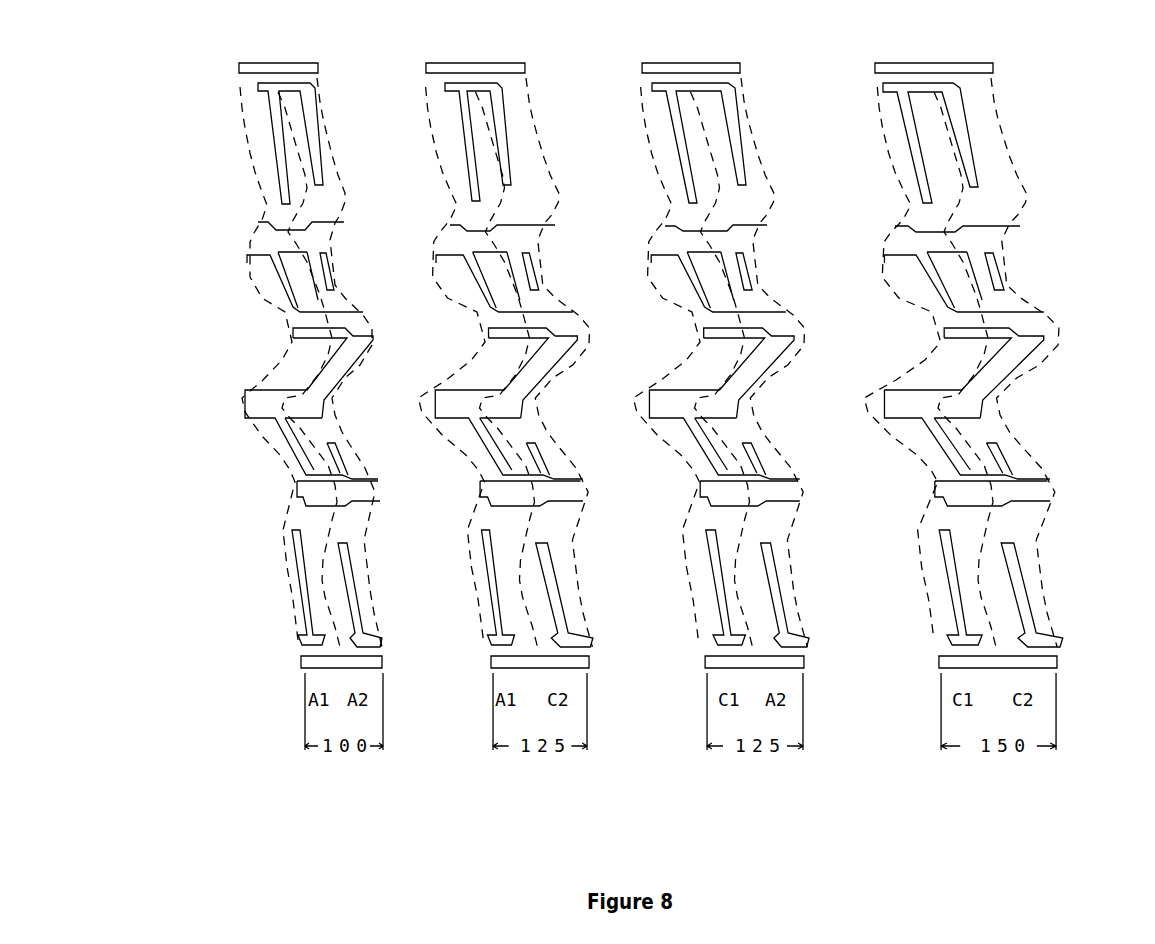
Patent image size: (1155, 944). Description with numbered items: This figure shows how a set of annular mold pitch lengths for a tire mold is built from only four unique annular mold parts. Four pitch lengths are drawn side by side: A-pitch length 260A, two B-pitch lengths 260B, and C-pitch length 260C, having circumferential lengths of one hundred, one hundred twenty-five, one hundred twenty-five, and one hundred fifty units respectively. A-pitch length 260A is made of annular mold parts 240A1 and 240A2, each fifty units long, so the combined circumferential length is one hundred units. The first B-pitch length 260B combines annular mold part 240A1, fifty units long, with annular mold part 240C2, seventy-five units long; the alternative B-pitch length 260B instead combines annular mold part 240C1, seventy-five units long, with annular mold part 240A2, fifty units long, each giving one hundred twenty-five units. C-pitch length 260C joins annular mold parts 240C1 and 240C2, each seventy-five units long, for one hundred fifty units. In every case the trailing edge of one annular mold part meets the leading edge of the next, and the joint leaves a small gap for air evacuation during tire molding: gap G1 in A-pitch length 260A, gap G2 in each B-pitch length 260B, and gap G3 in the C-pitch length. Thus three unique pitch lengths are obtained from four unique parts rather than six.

The A-pitch length 260A is at (278, 100).
The B-pitch length 260B is at (460, 100).
The C-pitch length 260C is at (935, 115).
The small gap G1 is at (282, 243).
The small gap G2 is at (510, 187).
The small gap G3 is at (988, 332).
The annular mold part 240A1 is at (300, 613).
The annular mold part 240A2 is at (360, 640).
The annular mold part 240C1 is at (585, 640).
The annular mold part 240C2 is at (1043, 615).